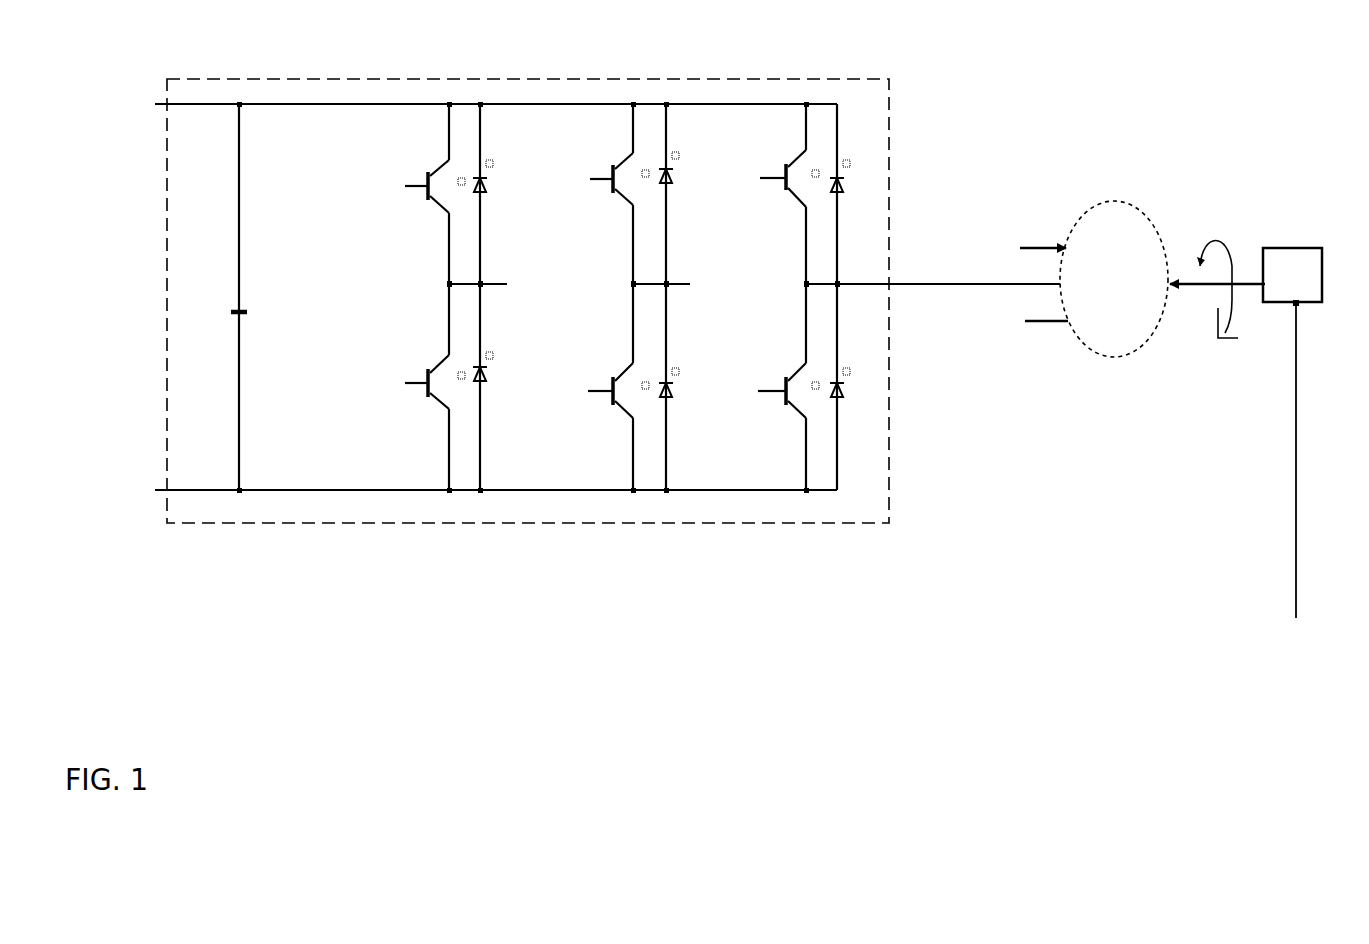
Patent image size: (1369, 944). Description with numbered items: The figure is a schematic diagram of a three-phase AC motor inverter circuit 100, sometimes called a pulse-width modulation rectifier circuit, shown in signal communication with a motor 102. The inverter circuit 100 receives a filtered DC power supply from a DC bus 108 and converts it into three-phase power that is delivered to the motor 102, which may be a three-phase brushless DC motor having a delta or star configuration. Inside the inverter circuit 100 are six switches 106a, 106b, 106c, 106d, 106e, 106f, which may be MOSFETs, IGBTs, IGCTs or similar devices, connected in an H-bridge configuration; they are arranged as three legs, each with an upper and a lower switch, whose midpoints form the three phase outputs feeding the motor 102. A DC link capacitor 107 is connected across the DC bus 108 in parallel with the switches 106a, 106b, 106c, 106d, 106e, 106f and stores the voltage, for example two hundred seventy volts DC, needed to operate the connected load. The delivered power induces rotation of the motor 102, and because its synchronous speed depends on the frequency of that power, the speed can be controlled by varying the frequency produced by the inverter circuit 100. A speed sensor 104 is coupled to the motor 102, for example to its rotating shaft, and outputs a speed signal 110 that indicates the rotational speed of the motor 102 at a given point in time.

The three-phase AC motor inverter circuit 100 is at (849, 76).
The motor 102 is at (1123, 198).
The speed sensor 104 is at (1298, 246).
The switch 106a is at (421, 194).
The switch 106b is at (426, 391).
The switch 106c is at (609, 184).
The switch 106d is at (609, 396).
The switch 106e is at (782, 188).
The switch 106f is at (782, 396).
The DC link capacitor 107 is at (230, 306).
The DC bus 108 is at (203, 108).
The speed signal 110 is at (1296, 440).